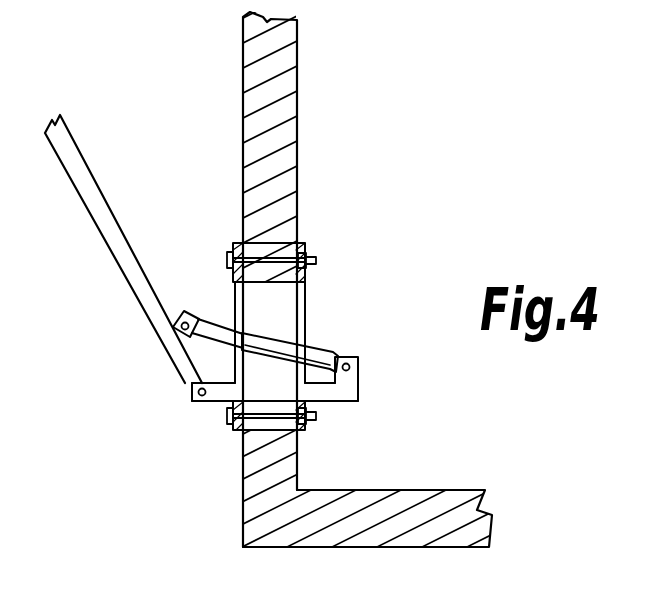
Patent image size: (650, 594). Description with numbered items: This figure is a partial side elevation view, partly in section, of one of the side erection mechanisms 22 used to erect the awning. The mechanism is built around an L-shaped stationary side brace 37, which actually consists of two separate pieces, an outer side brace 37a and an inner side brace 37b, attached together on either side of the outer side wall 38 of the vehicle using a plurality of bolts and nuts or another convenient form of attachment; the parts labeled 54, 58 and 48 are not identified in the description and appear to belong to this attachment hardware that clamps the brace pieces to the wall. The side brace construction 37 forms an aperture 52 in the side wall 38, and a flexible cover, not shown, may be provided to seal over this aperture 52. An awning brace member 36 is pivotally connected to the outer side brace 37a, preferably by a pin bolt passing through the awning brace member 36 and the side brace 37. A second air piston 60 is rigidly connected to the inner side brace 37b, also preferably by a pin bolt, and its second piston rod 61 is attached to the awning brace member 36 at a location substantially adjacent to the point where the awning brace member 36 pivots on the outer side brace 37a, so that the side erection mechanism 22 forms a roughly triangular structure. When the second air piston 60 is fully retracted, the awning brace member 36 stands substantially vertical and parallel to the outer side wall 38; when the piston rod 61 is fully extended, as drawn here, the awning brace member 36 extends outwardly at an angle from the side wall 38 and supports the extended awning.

The outer side wall 38 is at (250, 78).
The awning brace member 36 is at (87, 160).
The upper clamp 54 is at (235, 288).
The clamp bolt 58 is at (303, 286).
The aperture 52 is at (288, 310).
The second piston rod 61 is at (212, 322).
The second air piston 60 is at (330, 343).
The stationary side brace 37 is at (223, 402).
The outer side brace 37a is at (193, 398).
The inner side brace 37b is at (359, 368).
The side erection mechanism 22 is at (207, 412).
The lower clamp 48 is at (339, 412).